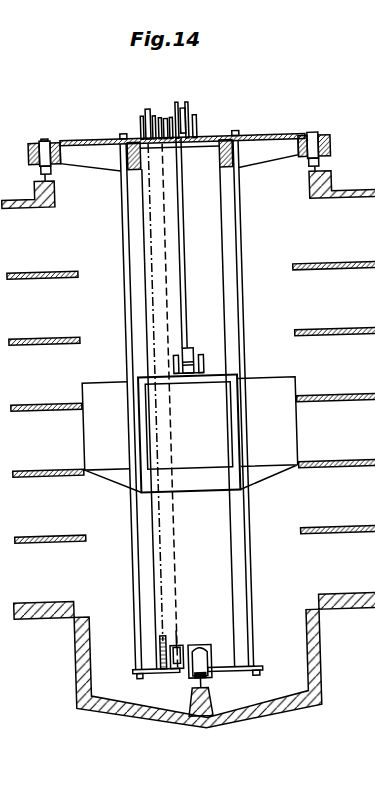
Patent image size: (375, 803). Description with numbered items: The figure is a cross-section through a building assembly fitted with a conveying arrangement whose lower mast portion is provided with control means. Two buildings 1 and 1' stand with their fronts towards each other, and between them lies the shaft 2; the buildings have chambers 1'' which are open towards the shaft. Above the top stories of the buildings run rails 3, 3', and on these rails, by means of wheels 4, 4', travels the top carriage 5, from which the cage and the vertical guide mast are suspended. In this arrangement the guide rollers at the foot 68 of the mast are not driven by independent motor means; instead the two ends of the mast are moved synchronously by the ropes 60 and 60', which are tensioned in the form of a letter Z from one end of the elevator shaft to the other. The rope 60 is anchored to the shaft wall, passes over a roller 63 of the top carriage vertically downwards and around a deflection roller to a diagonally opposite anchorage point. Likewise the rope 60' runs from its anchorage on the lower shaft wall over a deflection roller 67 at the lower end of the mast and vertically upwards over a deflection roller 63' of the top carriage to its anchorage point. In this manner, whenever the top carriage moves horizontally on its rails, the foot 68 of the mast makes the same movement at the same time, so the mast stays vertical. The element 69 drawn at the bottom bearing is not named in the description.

The building 1 is at (165, 137).
The building 1' is at (332, 351).
The chambers 1'' is at (43, 361).
The shaft 2 is at (110, 320).
The rail 3 is at (31, 177).
The rail 3' is at (334, 161).
The wheels 4 is at (32, 153).
The wheels 4' is at (313, 133).
The top carriage 5 is at (84, 137).
The rope 60 is at (126, 407).
The rope 60' is at (193, 405).
The roller 63 is at (151, 115).
The deflection roller 63' is at (175, 390).
The deflection roller 67 is at (184, 354).
The foot of the mast 68 is at (223, 644).
The bottom bearing 69 is at (190, 676).